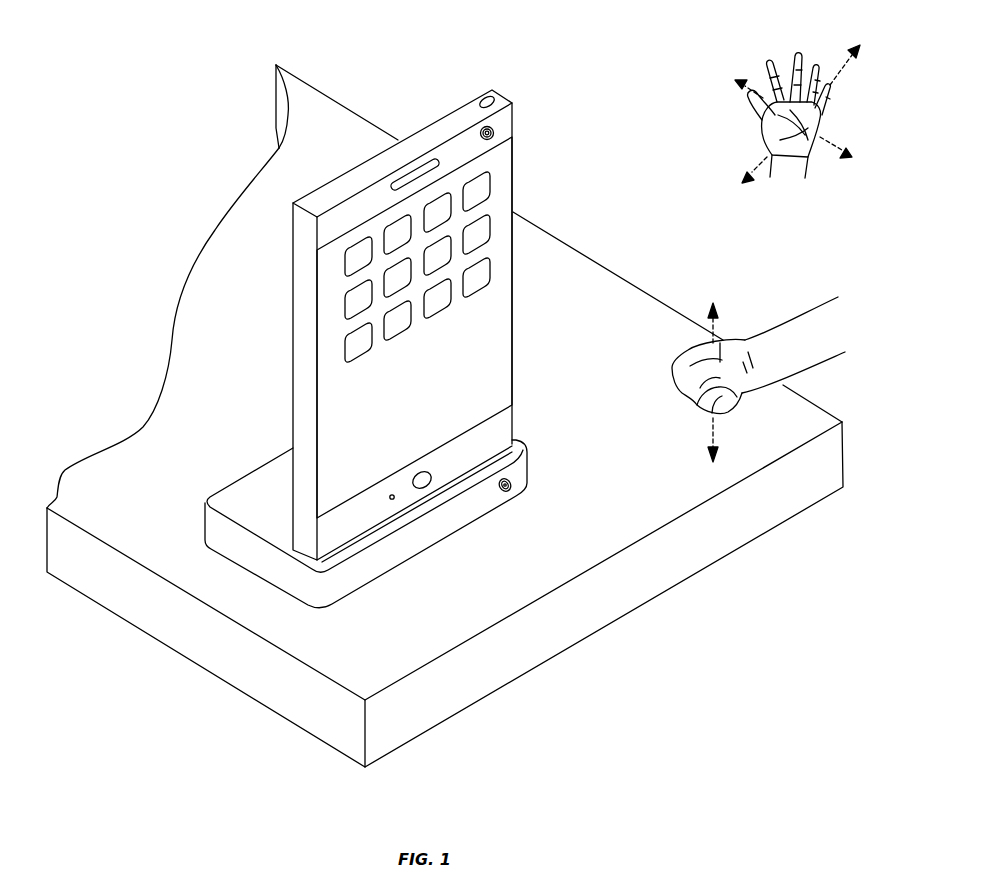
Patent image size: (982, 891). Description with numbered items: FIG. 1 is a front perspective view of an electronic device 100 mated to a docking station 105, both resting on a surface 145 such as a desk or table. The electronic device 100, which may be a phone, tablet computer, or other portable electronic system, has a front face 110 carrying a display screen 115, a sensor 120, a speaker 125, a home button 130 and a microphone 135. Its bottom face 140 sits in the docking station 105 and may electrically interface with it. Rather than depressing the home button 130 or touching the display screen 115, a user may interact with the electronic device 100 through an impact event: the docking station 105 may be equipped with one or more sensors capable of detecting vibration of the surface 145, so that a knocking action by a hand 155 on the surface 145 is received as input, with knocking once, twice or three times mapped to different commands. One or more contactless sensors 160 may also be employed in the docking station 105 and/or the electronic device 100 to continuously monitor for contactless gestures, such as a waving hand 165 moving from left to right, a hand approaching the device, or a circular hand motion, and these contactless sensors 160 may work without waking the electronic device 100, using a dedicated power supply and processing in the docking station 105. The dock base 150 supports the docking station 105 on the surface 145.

The electronic device 100 is at (440, 60).
The docking station 105 is at (238, 497).
The front face 110 is at (492, 323).
The display screen 115 is at (502, 173).
The sensor 120 is at (493, 128).
The speaker 125 is at (433, 163).
The home button 130 is at (420, 475).
The microphone 135 is at (392, 497).
The bottom face 140 is at (340, 560).
The surface 145 is at (597, 397).
The dock base 150 is at (262, 557).
The hand 155 is at (718, 353).
The contactless sensors 160 is at (512, 483).
The waving hand 165 is at (468, 117).